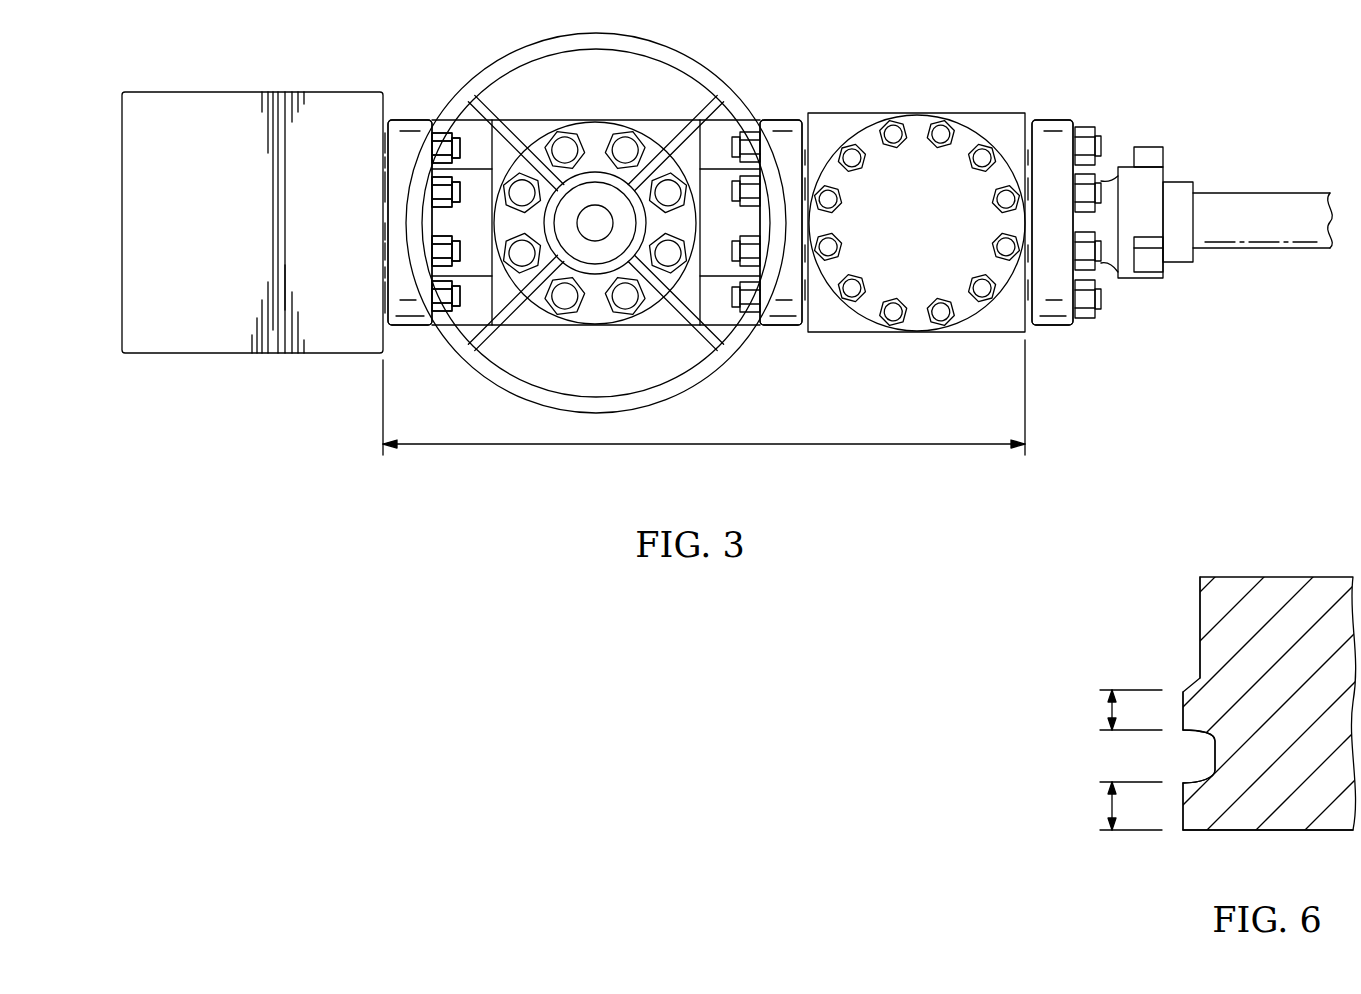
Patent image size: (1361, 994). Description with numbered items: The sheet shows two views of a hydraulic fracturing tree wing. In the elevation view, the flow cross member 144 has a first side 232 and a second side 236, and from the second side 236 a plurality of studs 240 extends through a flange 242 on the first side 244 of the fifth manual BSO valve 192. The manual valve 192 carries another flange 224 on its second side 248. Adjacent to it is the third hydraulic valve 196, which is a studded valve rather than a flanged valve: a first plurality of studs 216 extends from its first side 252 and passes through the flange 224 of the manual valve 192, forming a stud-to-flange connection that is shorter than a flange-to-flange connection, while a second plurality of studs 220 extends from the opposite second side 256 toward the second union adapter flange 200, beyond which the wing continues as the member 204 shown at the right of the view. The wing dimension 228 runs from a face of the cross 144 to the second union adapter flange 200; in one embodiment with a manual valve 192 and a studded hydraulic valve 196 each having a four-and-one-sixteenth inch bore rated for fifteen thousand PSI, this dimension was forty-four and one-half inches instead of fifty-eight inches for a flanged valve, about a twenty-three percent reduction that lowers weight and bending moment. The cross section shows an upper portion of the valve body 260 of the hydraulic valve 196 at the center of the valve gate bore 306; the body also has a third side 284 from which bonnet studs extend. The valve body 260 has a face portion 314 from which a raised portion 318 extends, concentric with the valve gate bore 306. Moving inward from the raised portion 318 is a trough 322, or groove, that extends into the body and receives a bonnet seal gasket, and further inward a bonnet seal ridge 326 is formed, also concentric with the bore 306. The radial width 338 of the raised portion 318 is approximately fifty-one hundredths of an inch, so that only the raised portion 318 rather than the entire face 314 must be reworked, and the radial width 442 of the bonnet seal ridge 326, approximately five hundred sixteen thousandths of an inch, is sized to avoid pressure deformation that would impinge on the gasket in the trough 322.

In FIG. 3, the flow cross member 144 is at (156, 100).
In FIG. 3, the first side 232 is at (121, 103).
In FIG. 3, the second side 236 is at (393, 92).
In FIG. 3, the studs 240 is at (464, 133).
In FIG. 3, the flange 242 is at (413, 328).
In FIG. 3, the first side 244 is at (483, 277).
In FIG. 3, the second side 248 is at (708, 278).
In FIG. 3, the fifth manual BSO valve 192 is at (562, 118).
In FIG. 3, the first plurality of studs 216 is at (727, 138).
In FIG. 3, the first side 252 is at (797, 115).
In FIG. 3, the flange 224 is at (785, 328).
In FIG. 3, the third hydraulic valve 196 is at (893, 112).
In FIG. 3, the third side 284 is at (986, 120).
In FIG. 3, the second side 256 is at (1030, 117).
In FIG. 3, the second union adapter flange 200 is at (1063, 330).
In FIG. 3, the second plurality of studs 220 is at (1098, 297).
In FIG. 3, the output shaft 204 is at (1258, 193).
In FIG. 3, the wing dimension 228 is at (703, 445).
In FIG. 6, the valve body 260 is at (1288, 577).
In FIG. 6, the face portion 314 is at (1198, 616).
In FIG. 6, the raised portion 318 is at (1181, 700).
In FIG. 6, the trough 322 is at (1213, 764).
In FIG. 6, the bonnet seal ridge 326 is at (1182, 820).
In FIG. 6, the valve gate bore 306 is at (1303, 830).
In FIG. 6, the radial width 338 is at (1110, 707).
In FIG. 6, the radial width 442 is at (1110, 803).